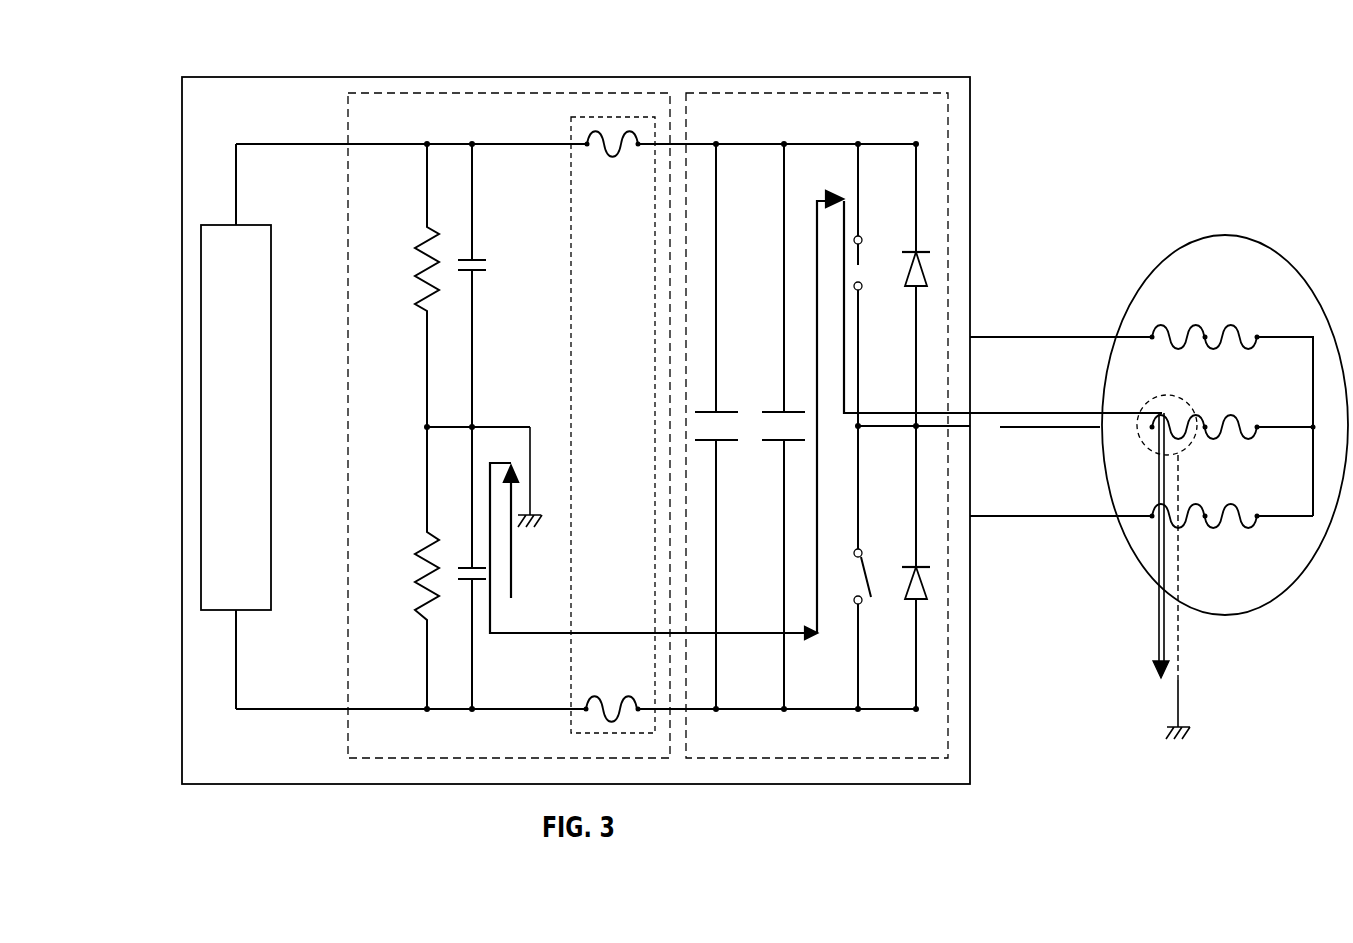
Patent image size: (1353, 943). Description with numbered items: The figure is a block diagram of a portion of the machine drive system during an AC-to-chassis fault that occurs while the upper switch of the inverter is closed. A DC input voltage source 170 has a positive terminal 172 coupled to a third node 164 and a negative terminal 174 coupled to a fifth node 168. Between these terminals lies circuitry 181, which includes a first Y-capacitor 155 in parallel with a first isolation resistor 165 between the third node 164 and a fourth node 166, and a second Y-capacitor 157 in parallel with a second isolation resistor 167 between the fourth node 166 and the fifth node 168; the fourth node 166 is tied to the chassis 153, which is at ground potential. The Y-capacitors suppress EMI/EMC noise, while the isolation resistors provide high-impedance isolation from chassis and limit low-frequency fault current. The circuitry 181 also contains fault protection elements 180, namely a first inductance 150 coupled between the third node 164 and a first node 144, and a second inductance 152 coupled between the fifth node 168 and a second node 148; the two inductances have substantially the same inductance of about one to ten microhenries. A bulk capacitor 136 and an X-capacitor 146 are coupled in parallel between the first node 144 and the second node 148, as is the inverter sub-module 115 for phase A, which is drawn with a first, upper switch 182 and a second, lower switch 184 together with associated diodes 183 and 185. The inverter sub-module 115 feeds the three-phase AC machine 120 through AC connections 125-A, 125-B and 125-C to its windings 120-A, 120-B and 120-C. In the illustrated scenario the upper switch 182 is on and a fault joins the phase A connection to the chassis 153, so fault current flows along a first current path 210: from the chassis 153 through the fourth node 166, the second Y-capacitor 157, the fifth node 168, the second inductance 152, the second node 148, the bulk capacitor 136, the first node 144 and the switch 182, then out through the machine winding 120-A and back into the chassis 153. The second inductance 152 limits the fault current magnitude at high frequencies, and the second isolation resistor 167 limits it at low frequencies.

The inverter sub-module 115 is at (888, 93).
The machine 120 is at (1160, 276).
The machine winding 120-A is at (1205, 427).
The motor phase B winding 120-B is at (1205, 337).
The motor phase C winding 120-C is at (1205, 516).
The phase A conductor 125-A is at (1010, 429).
The phase B conductor 125-B is at (1010, 339).
The phase C conductor 125-C is at (1010, 518).
The bulk capacitor 136 is at (778, 411).
The first node 144 is at (784, 144).
The X-capacitor 146 is at (723, 442).
The second node 148 is at (717, 712).
The first inductance 150 is at (590, 136).
The second inductance 152 is at (612, 702).
The chassis 153 is at (540, 521).
The first Y-capacitor 155 is at (484, 271).
The second Y-capacitor 157 is at (463, 581).
The third node 164 is at (472, 144).
The first isolation resistor 165 is at (426, 238).
The fourth node 166 is at (425, 427).
The second isolation resistor 167 is at (426, 545).
The fifth node 168 is at (427, 712).
The DC input voltage source 170 is at (222, 412).
The positive terminal 172 is at (283, 144).
The negative terminal 174 is at (284, 710).
The fault protection elements 180 is at (645, 117).
The circuitry 181 is at (387, 93).
The first switch 182 is at (860, 264).
The upper diode 183 is at (926, 272).
The lower switch 184 is at (866, 576).
The lower diode 185 is at (926, 586).
The first current path 210 is at (1158, 618).